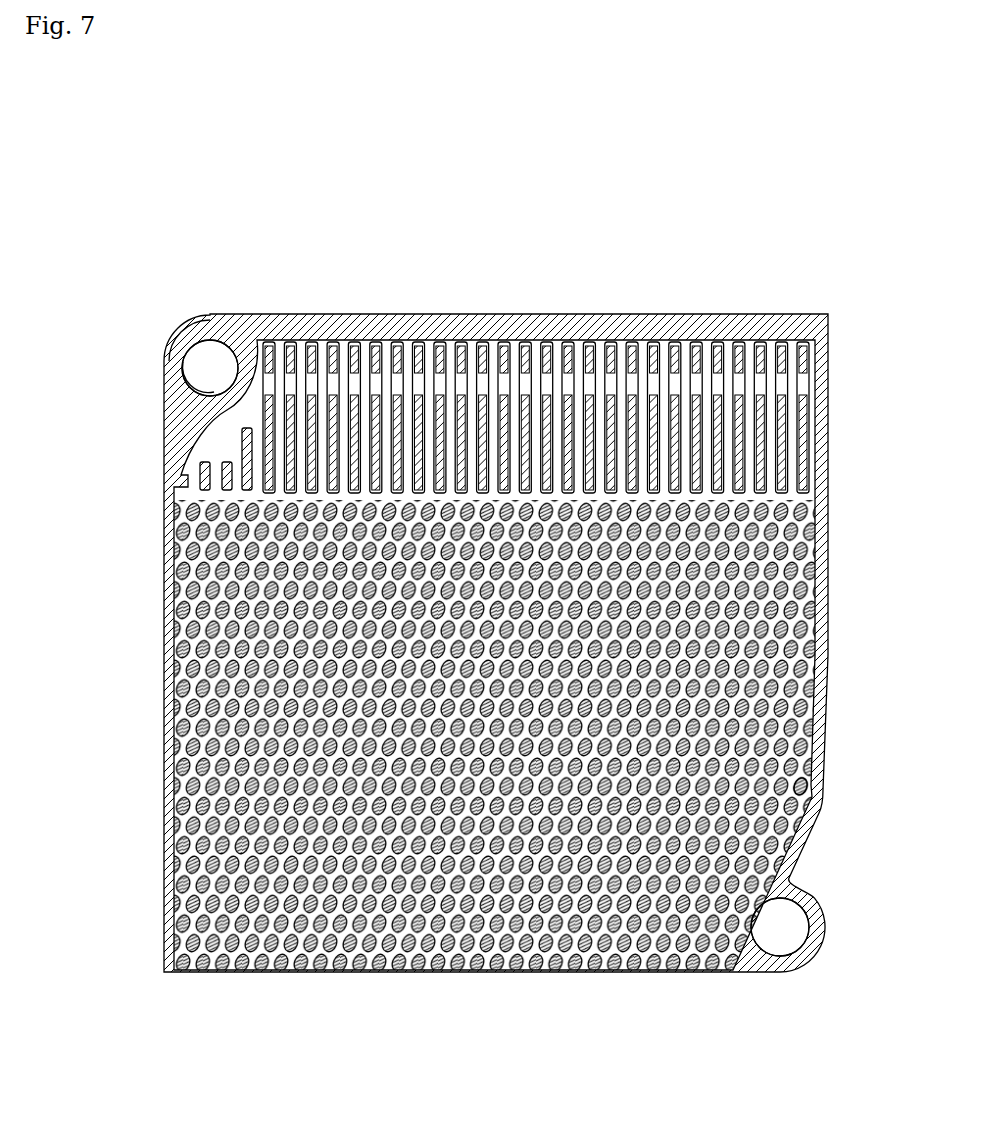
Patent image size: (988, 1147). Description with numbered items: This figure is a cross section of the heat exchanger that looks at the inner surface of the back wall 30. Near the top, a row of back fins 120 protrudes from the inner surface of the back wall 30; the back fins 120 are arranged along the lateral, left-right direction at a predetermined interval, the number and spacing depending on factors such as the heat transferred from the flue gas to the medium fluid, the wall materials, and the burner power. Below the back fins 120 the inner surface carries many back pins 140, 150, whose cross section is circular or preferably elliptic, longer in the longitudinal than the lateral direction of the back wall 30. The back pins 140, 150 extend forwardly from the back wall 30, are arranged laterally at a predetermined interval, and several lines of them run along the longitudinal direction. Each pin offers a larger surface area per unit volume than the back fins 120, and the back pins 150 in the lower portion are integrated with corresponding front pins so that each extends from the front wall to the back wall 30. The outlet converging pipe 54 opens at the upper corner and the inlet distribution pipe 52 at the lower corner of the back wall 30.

The back wall 30 is at (562, 302).
The outlet converging pipe 54 is at (162, 333).
The inlet distribution pipe 52 is at (822, 902).
The back fins 120 is at (812, 438).
The back pins 140 is at (813, 548).
The back pins 150 is at (797, 797).